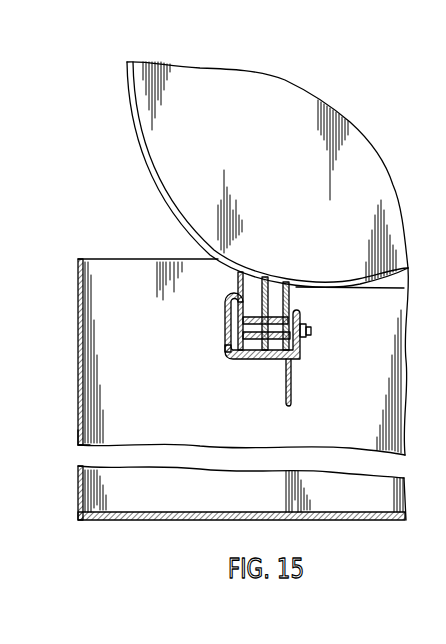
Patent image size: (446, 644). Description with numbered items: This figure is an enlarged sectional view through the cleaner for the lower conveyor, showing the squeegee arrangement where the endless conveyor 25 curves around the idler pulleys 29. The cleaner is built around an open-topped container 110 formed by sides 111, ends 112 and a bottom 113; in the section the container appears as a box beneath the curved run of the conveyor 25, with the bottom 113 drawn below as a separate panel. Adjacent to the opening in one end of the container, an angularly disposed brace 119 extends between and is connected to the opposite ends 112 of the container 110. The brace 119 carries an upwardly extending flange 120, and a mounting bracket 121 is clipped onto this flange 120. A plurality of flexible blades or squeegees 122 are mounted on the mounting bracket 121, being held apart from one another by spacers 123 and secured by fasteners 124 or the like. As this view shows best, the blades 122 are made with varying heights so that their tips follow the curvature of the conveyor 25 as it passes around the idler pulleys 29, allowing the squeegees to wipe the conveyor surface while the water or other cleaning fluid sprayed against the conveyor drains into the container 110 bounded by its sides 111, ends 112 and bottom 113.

The idler pulleys 29 is at (250, 80).
The conveyor 25 is at (146, 176).
The container 110 is at (78, 423).
The sides 111 is at (77, 360).
The ends 112 is at (137, 270).
The bottom 113 is at (170, 522).
The brace 119 is at (232, 360).
The flange 120 is at (226, 341).
The mounting bracket 121 is at (224, 306).
The blades 122 is at (275, 284).
The spacers 123 is at (248, 316).
The fasteners 124 is at (303, 337).